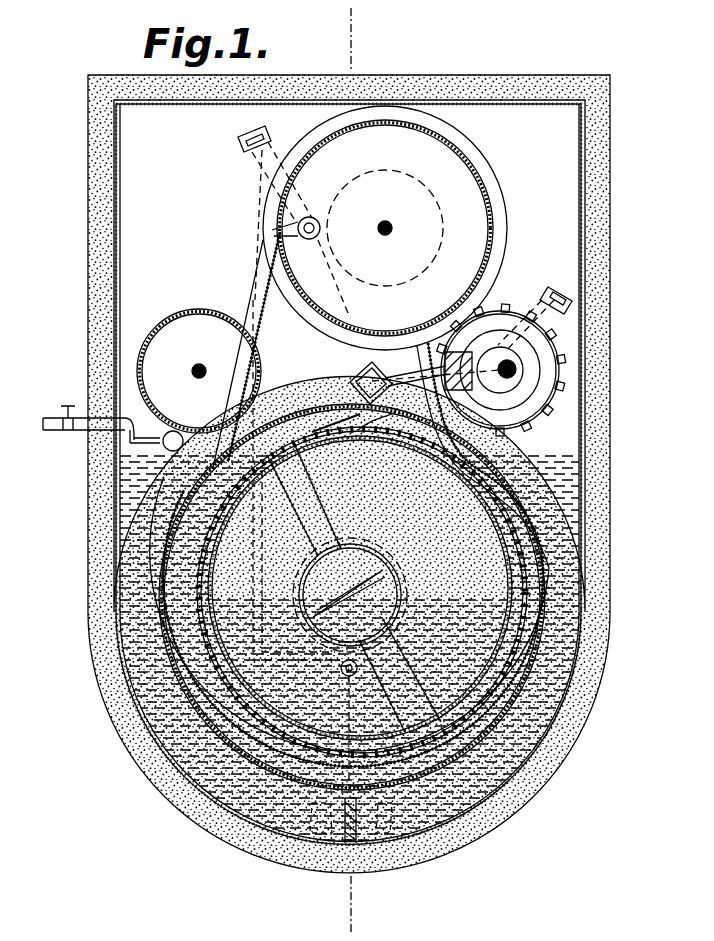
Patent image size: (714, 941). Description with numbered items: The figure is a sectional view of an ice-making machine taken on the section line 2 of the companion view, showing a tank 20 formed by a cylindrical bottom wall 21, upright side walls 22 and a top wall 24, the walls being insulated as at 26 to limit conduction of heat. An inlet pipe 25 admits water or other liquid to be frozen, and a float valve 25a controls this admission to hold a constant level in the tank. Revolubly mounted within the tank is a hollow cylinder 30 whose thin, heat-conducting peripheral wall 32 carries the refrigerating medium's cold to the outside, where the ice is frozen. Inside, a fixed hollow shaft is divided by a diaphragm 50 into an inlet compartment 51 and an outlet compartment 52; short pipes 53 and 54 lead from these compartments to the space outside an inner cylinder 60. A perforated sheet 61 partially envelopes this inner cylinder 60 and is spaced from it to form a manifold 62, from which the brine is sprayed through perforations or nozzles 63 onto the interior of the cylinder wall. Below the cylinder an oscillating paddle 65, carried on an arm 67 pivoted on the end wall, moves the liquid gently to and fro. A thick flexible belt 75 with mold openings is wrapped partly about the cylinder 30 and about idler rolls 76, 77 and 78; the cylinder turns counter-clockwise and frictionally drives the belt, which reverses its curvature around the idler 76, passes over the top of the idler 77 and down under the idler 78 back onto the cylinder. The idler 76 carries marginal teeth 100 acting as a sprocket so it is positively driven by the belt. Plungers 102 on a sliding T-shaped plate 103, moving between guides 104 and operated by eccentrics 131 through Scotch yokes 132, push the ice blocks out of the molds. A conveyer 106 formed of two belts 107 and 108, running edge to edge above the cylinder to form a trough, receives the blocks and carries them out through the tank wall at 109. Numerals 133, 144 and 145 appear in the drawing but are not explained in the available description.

The section line 2 is at (376, 939).
The tank 20 is at (345, 450).
The cylindrical bottom wall 21 is at (345, 450).
The upright side walls 22 is at (345, 450).
The top wall 24 is at (345, 450).
The inlet pipe 25 is at (52, 432).
The float valve 25a is at (165, 448).
The insulation 26 is at (505, 50).
The hollow cylinder 30 is at (562, 534).
The peripheral wall 32 is at (333, 422).
The diaphragm 50 is at (382, 594).
The inlet compartment 51 is at (385, 578).
The outlet compartment 52 is at (362, 563).
The inlet pipe 53 is at (405, 652).
The outlet pipe 54 is at (318, 517).
The inner cylinder 60 is at (301, 597).
The perforated sheet 61 is at (428, 732).
The manifold 62 is at (438, 462).
The perforations or nozzles 63 is at (540, 696).
The oscillating paddle 65 is at (330, 838).
The arm 67 is at (346, 692).
The flexible belt 75 is at (465, 144).
The idler roll 76 is at (556, 370).
The idler roll 77 is at (488, 216).
The idler roll 78 is at (144, 371).
The teeth 100 is at (556, 370).
The plungers 102 is at (414, 368).
The sliding T-shaped plate 103 is at (475, 361).
The guides 104 is at (446, 360).
The conveyer 106 is at (378, 428).
The conveyer belt 107 is at (354, 380).
The conveyer belt 108 is at (244, 150).
The tank wall passage 109 is at (322, 240).
The eccentrics 131 is at (562, 372).
The Scotch yokes 132 is at (500, 340).
The pulley shaft 133 is at (140, 371).
The level line 144 is at (248, 590).
The level line 145 is at (296, 647).